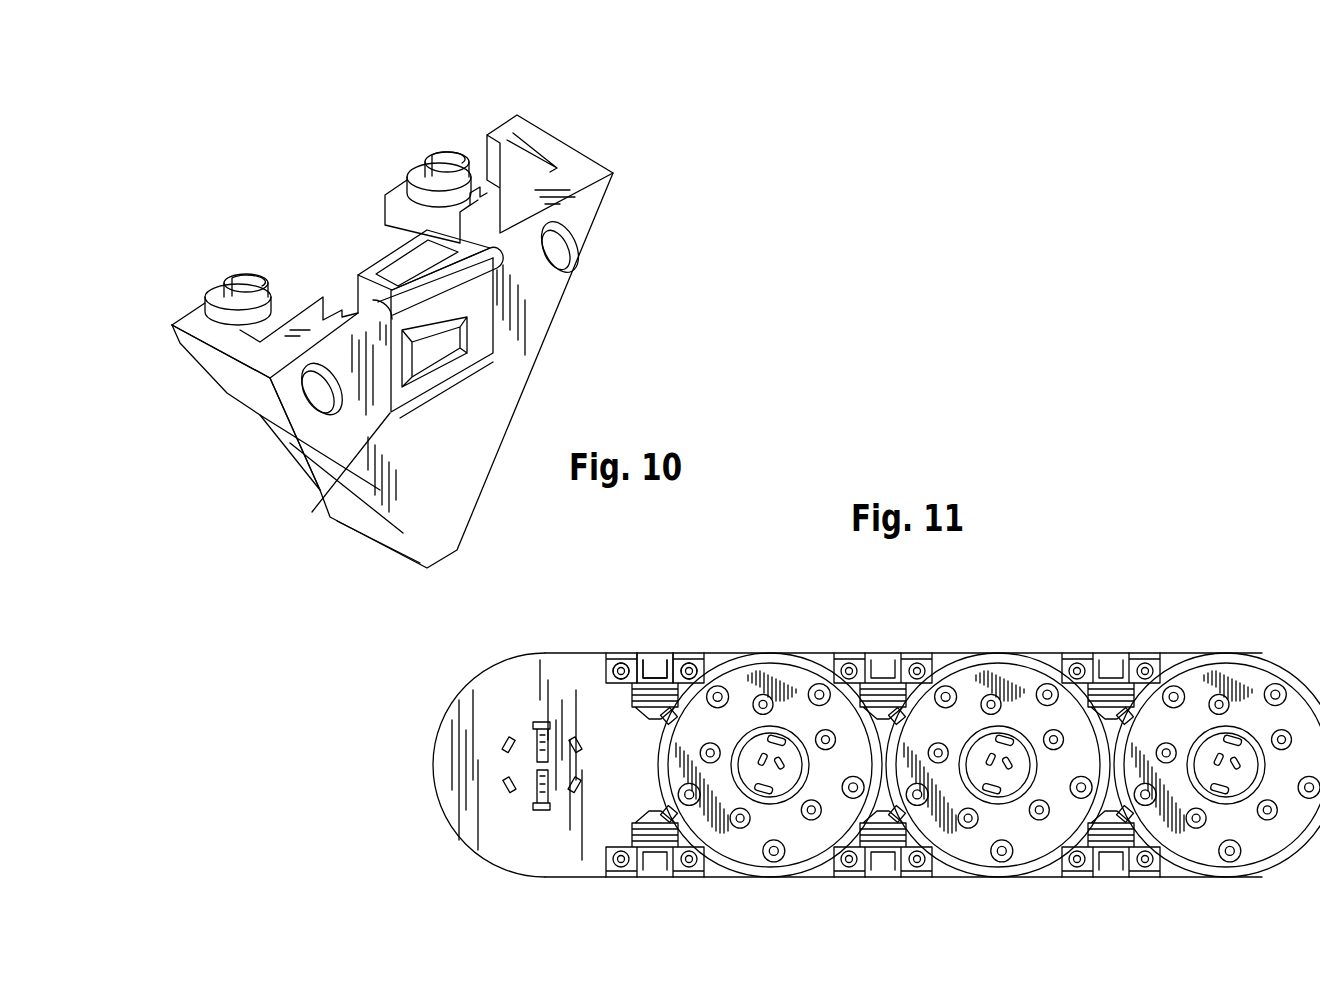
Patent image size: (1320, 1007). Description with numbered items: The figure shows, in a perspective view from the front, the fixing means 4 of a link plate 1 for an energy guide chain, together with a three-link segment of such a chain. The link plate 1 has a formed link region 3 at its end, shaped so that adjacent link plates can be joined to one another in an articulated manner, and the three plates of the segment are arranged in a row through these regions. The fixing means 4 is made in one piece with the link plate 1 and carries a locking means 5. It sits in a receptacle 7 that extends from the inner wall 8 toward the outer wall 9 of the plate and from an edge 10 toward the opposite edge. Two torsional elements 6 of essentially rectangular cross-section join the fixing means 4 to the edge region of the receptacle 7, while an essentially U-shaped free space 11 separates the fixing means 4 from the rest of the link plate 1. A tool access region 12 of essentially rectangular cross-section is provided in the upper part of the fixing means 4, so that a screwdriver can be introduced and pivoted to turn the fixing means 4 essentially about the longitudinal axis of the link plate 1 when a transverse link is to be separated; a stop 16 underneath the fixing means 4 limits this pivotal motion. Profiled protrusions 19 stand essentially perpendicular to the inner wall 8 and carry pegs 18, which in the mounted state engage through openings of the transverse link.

In FIG. 11, the link plate 1 is at (520, 632).
In FIG. 11, the link region 3 is at (470, 683).
In FIG. 10, the fixing means 4 is at (357, 250).
In FIG. 11, the fixing means 4 is at (1319, 640).
In FIG. 11, the locking means 5 is at (857, 754).
In FIG. 10, the torsional elements 6 is at (410, 306).
In FIG. 11, the torsional elements 6 is at (869, 633).
In FIG. 10, the receptacle 7 is at (338, 180).
In FIG. 11, the inner wall 8 is at (553, 700).
In FIG. 10, the outer wall 9 is at (440, 493).
In FIG. 10, the edge 10 is at (583, 173).
In FIG. 11, the edge 10 is at (989, 735).
In FIG. 10, the free space 11 is at (320, 490).
In FIG. 10, the tool access region 12 is at (405, 270).
In FIG. 11, the stop 16 is at (898, 753).
In FIG. 10, the pegs 18 is at (243, 277).
In FIG. 10, the protrusions 19 is at (396, 183).